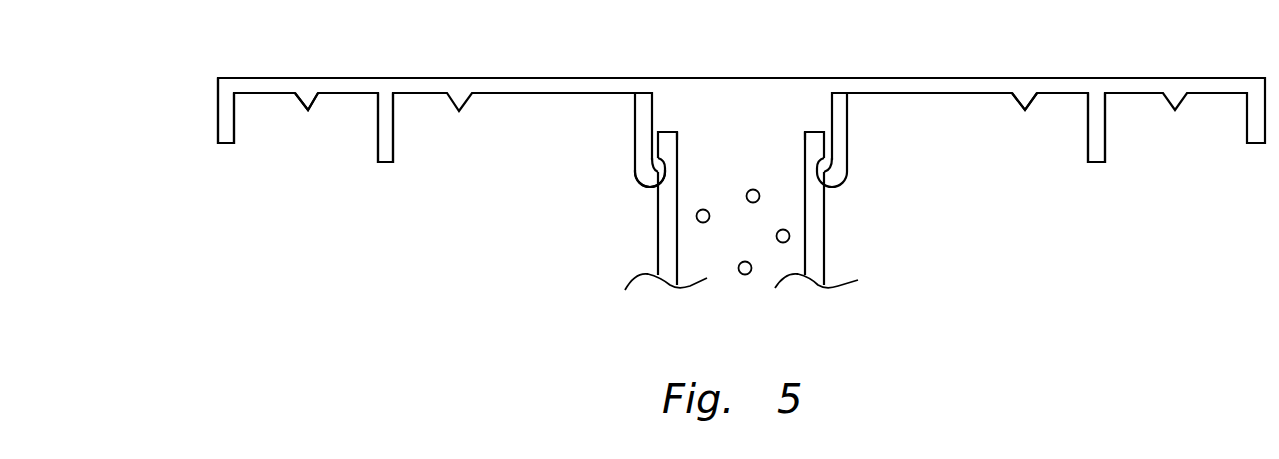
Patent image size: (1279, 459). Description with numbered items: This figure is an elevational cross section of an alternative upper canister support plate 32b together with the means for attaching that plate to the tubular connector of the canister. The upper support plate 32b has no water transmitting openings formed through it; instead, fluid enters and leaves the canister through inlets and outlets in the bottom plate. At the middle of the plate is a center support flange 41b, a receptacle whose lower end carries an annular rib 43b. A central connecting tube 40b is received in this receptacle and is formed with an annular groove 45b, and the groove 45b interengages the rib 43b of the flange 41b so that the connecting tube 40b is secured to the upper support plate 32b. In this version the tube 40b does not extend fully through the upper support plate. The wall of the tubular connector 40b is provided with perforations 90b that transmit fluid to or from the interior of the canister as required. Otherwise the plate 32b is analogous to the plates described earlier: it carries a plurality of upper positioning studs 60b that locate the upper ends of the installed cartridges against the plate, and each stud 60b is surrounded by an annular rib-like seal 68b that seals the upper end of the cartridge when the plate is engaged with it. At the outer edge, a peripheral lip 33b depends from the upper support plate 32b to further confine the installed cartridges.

The upper canister support plate 32b is at (525, 78).
The peripheral lip 33b is at (223, 145).
The annular rib-like seal 68b is at (309, 112).
The upper positioning stud 60b is at (385, 163).
The center support flange 41b is at (635, 138).
The annular rib 43b is at (645, 187).
The annular groove 45b is at (815, 172).
The central connecting tube 40b is at (678, 250).
The perforations 90b is at (748, 275).